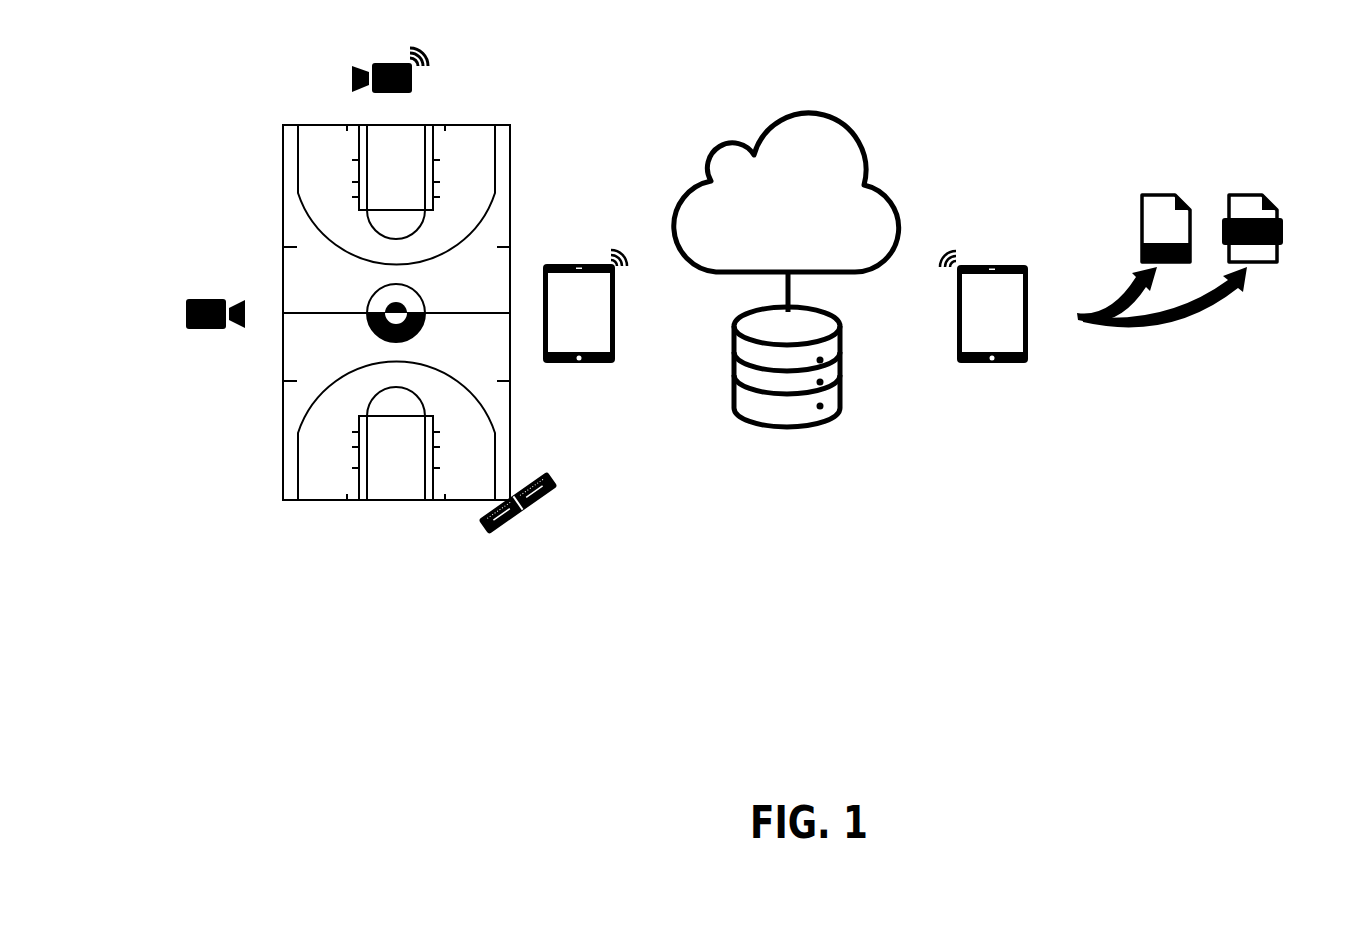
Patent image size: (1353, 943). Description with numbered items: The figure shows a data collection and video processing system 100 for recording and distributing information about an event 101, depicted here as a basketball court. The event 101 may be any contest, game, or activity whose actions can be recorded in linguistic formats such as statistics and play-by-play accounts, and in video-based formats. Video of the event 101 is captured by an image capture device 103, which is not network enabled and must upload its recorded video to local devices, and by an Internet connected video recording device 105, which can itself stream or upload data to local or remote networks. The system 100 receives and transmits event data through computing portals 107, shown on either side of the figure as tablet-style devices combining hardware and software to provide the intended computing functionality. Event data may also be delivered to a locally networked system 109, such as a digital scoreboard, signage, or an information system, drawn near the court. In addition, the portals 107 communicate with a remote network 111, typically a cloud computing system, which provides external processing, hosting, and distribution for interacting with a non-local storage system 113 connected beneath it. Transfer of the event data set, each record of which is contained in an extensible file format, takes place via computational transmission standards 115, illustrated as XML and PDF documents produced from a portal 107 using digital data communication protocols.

The data collection and video processing system 100 is at (1168, 590).
The event 101 is at (480, 125).
The image capture device 103 is at (193, 299).
The Internet connected video recording device 105 is at (392, 63).
The computing portal 107 is at (595, 364).
The locally networked system 109 is at (520, 512).
The remote network 111 is at (862, 152).
The storage system 113 is at (823, 425).
The computational transmission standard 115 is at (1250, 195).